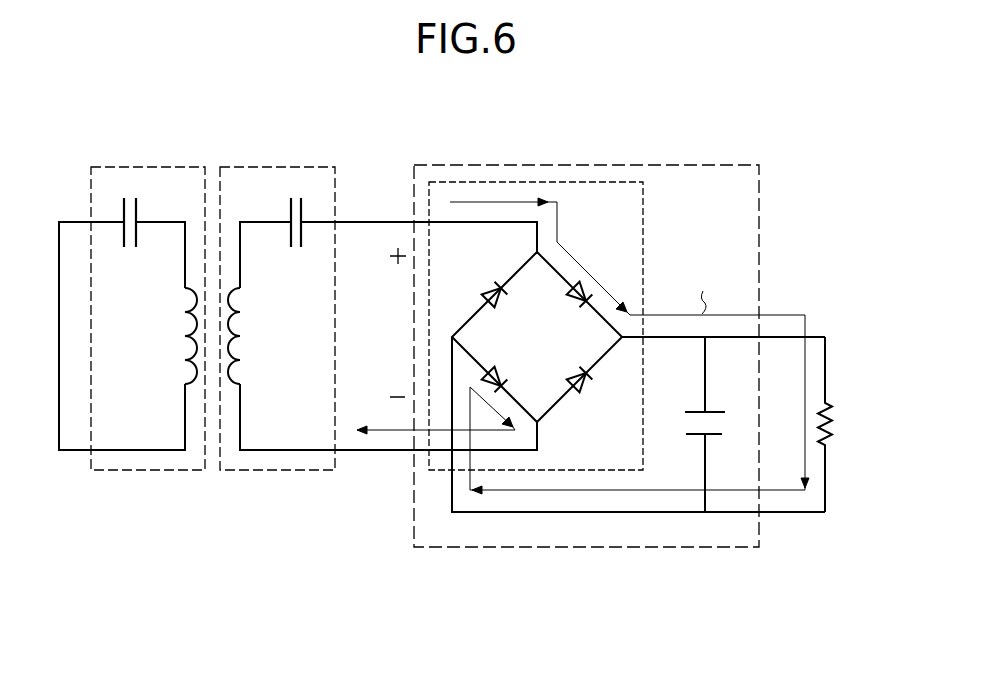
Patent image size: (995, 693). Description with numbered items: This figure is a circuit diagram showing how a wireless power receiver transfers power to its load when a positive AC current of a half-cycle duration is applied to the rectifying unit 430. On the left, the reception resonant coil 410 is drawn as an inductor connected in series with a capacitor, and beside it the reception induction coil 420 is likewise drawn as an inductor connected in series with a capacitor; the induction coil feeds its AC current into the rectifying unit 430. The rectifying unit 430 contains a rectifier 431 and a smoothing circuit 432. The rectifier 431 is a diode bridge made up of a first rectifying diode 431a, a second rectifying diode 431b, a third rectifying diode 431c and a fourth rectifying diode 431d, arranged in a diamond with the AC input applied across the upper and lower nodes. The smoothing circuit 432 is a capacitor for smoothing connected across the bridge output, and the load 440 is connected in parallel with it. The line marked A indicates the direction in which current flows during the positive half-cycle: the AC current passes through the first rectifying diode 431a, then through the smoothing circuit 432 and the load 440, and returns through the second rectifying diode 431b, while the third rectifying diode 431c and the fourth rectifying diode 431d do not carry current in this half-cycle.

The reception resonant coil 410 is at (149, 165).
The reception induction coil 420 is at (271, 165).
The rectifying unit 430 is at (606, 165).
The rectifier 431 is at (524, 181).
The first rectifying diode 431a is at (587, 290).
The second rectifying diode 431b is at (494, 370).
The third rectifying diode 431c is at (586, 388).
The fourth rectifying diode 431d is at (490, 286).
The smoothing circuit 432 is at (723, 422).
The load 440 is at (837, 418).